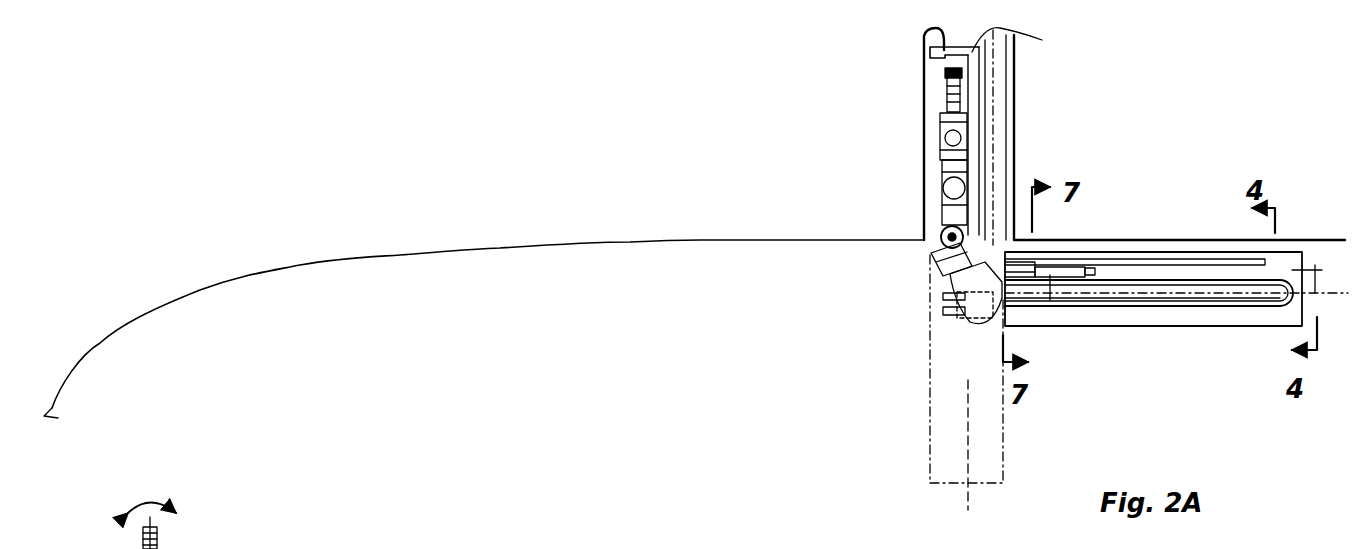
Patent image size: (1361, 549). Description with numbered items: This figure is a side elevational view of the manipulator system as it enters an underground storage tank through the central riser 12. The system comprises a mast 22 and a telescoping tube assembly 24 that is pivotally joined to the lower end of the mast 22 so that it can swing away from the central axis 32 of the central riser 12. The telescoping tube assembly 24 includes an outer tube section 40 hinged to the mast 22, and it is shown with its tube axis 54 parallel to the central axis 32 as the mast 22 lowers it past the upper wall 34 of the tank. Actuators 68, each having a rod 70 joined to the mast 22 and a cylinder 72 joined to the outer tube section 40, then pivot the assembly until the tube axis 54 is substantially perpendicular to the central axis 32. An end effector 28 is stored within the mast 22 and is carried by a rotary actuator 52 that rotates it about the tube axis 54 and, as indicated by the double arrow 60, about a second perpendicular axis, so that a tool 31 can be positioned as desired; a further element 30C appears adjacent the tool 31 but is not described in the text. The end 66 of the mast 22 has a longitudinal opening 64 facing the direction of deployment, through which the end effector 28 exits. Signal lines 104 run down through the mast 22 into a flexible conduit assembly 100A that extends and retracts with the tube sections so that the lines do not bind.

The central riser 12 is at (922, 131).
The mast 22 is at (924, 46).
The telescoping tube assembly 24 is at (1161, 349).
The end effector 28 is at (938, 100).
The tool 31 is at (160, 530).
The base member 30C is at (206, 543).
The central axis 32 is at (1025, 135).
The upper wall 34 is at (712, 240).
The outer tube section 40 is at (1093, 330).
The rotary actuator 52 is at (934, 287).
The tube axis 54 is at (1347, 292).
The double arrow 60 is at (152, 503).
The longitudinal opening 64 is at (972, 185).
The end of the mast 66 is at (1020, 127).
The actuators 68 is at (1050, 300).
The rods 70 is at (997, 325).
The cylinder 72 is at (1068, 268).
The flexible conduit assembly 100A is at (1214, 316).
The signal lines 104 is at (998, 73).